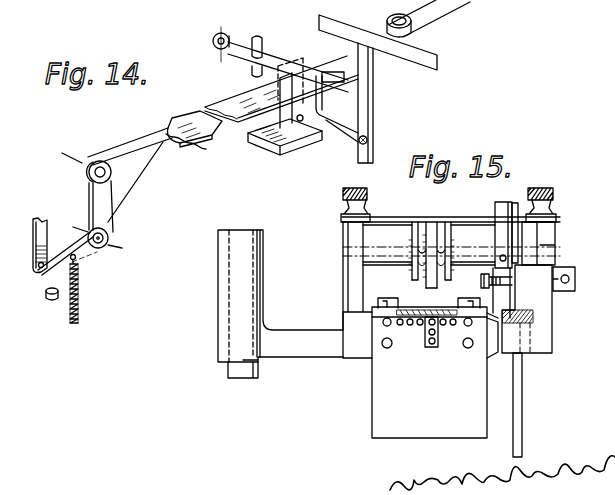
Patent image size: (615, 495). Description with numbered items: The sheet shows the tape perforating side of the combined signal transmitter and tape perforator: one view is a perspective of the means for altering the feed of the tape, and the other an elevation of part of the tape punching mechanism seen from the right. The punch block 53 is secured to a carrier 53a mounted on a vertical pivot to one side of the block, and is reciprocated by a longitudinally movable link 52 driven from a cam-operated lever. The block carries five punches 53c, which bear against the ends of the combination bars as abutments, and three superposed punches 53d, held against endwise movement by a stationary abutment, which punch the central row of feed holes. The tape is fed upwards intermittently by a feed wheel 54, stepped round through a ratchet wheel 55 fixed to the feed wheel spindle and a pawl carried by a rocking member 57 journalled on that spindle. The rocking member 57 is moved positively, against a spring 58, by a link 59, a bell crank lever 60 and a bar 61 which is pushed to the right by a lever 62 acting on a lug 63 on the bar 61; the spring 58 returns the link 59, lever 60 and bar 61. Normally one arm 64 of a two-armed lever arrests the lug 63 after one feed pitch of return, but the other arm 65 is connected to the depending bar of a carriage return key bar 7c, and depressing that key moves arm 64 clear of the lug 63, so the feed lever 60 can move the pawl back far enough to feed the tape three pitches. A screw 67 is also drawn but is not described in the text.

In FIG. 14, the carriage return key bar 7c is at (418, 61).
In FIG. 14, the spring 58 is at (75, 297).
In FIG. 14, the link 59 is at (46, 231).
In FIG. 15, the link 59 is at (518, 397).
In FIG. 14, the bell crank lever 60 is at (115, 197).
In FIG. 14, the bar 61 is at (255, 92).
In FIG. 14, the lever 62 is at (269, 63).
In FIG. 14, the lug 63 is at (343, 77).
In FIG. 14, the arm of lever 64 is at (330, 104).
In FIG. 14, the arm of lever 65 is at (339, 135).
In FIG. 15, the link 52 is at (527, 314).
In FIG. 15, the punch block 53 is at (389, 327).
In FIG. 15, the carrier 53a is at (260, 369).
In FIG. 15, the punches 53c is at (445, 326).
In FIG. 15, the superposed punches 53d is at (432, 350).
In FIG. 15, the feed wheel 54 is at (428, 278).
In FIG. 15, the ratchet wheel 55 is at (507, 230).
In FIG. 15, the rocking member 57 is at (517, 208).
In FIG. 15, the screw 67 is at (498, 281).